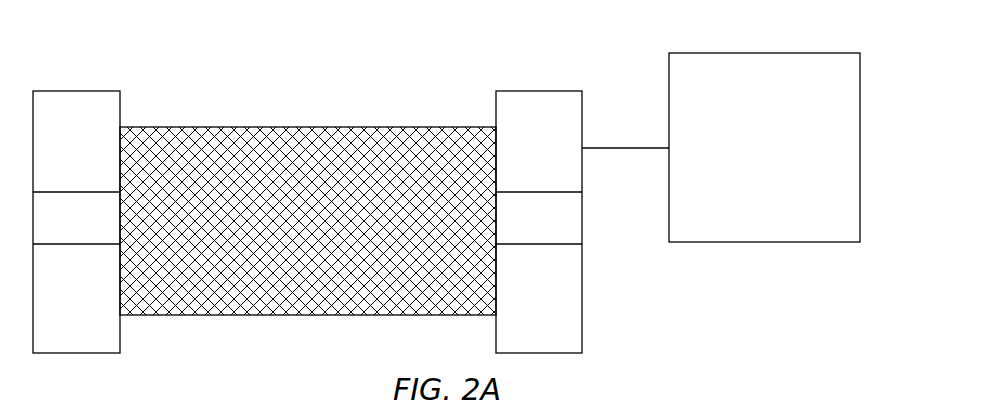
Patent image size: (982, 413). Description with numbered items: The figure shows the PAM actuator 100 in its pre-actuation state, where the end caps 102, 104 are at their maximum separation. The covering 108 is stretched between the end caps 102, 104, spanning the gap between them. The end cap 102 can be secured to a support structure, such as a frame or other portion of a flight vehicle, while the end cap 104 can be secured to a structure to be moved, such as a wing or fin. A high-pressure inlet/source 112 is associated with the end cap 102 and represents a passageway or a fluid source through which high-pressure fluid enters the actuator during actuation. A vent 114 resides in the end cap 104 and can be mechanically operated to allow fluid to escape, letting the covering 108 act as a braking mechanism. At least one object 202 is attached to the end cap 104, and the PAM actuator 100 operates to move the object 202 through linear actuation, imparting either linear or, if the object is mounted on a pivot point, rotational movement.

The PAM actuator 100 is at (169, 69).
The end cap 102 is at (123, 237).
The end cap 104 is at (586, 224).
The covering 108 is at (318, 126).
The high-pressure inlet/source 112 is at (52, 190).
The vent 114 is at (512, 190).
The object 202 is at (768, 244).